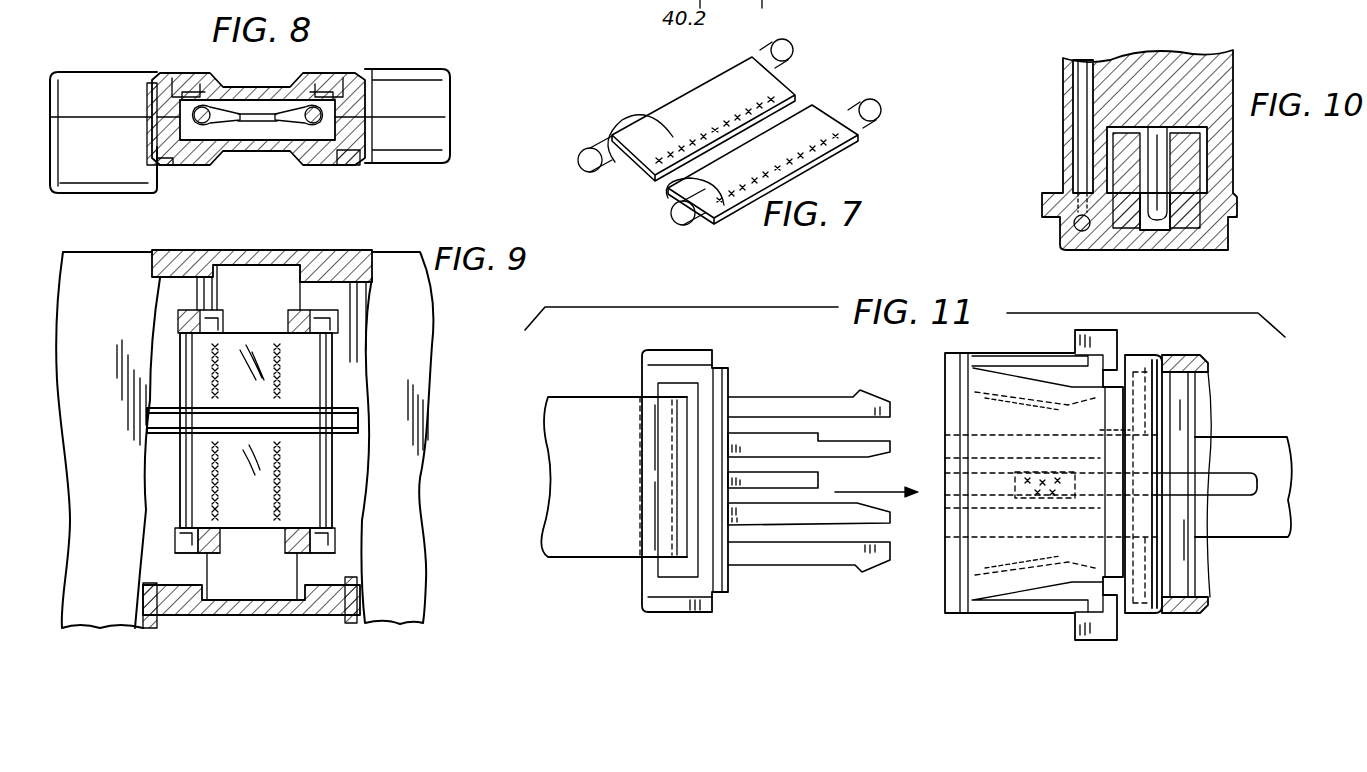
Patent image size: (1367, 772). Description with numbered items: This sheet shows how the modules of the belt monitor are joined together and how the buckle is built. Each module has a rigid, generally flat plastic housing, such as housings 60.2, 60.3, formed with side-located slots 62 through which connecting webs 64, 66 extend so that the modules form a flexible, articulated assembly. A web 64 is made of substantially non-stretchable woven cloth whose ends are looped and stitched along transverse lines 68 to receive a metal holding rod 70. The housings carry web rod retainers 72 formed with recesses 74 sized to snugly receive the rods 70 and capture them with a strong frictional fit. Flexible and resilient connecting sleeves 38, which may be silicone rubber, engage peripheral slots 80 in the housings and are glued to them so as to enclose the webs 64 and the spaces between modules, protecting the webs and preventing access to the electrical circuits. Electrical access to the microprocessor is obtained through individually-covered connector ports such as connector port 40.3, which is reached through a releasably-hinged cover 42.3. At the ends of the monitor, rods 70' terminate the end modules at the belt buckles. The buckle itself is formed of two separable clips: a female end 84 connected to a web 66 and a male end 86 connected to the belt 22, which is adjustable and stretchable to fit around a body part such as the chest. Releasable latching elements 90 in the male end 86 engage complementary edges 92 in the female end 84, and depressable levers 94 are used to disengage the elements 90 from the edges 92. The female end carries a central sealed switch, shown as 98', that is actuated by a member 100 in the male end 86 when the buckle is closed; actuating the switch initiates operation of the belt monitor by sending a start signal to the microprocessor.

In FIG. 11, the belt 22 is at (580, 558).
In FIG. 8, the connecting sleeve 38 is at (270, 87).
In FIG. 9, the connecting sleeve 38 is at (276, 615).
In FIG. 10, the connector port 40.3 is at (1160, 183).
In FIG. 10, the releasably-hinged cover 42.3 is at (1122, 243).
In FIG. 8, the housing 60.2 is at (430, 69).
In FIG. 8, the housing 60.3 is at (98, 78).
In FIG. 10, the housing 60.3 is at (1062, 140).
In FIG. 8, the side-located slot 62 is at (170, 85).
In FIG. 8, the web 64 is at (258, 122).
In FIG. 9, the web 64 is at (246, 510).
In FIG. 7, the web 64 is at (680, 135).
In FIG. 11, the web 66 is at (1250, 437).
In FIG. 9, the transverse stitching line 68 is at (192, 460).
In FIG. 7, the transverse stitching line 68 is at (812, 118).
In FIG. 8, the metal holding rod 70 is at (250, 120).
In FIG. 9, the metal holding rod 70 is at (244, 543).
In FIG. 7, the metal holding rod 70 is at (732, 166).
In FIG. 11, the rod 70' is at (1085, 430).
In FIG. 9, the web rod retainer 72 is at (290, 303).
In FIG. 9, the recess 74 is at (178, 318).
In FIG. 8, the peripheral slot 80 is at (170, 165).
In FIG. 9, the peripheral slot 80 is at (180, 250).
In FIG. 11, the female end 84 is at (1168, 336).
In FIG. 11, the male end 86 is at (822, 374).
In FIG. 11, the releasable latching element 90 is at (882, 395).
In FIG. 11, the complementary edge 92 is at (1090, 405).
In FIG. 11, the depressable lever 94 is at (1075, 343).
In FIG. 11, the crimp 98' is at (1011, 511).
In FIG. 11, the member 100 is at (818, 479).